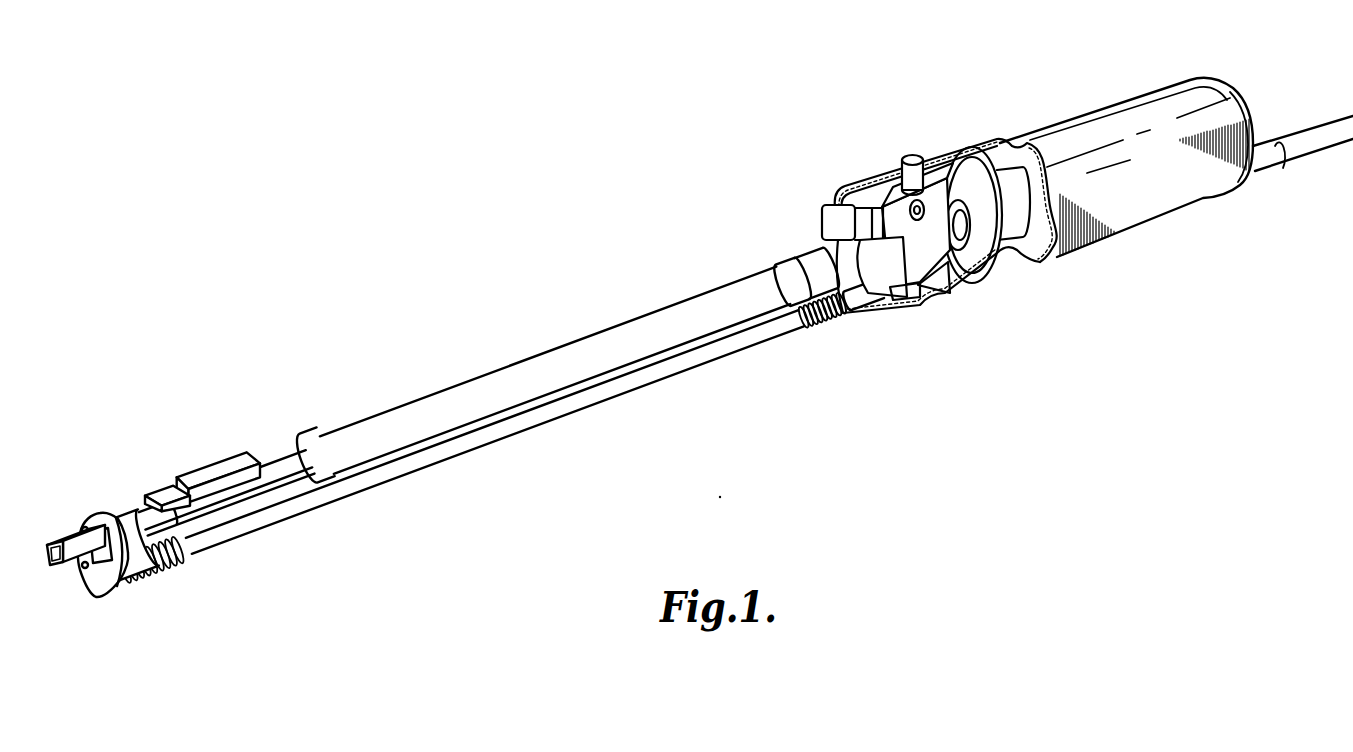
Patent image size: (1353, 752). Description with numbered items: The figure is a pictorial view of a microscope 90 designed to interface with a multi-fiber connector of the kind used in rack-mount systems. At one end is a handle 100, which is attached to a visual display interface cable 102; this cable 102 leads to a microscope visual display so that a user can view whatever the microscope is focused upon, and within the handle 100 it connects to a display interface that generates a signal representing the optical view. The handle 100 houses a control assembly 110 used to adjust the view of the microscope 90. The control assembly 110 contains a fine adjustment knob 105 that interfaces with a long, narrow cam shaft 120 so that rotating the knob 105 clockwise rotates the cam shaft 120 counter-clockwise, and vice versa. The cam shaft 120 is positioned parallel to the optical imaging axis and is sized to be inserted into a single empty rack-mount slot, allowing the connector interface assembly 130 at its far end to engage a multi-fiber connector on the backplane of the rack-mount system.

The microscope 90 is at (700, 367).
The handle 100 is at (1118, 217).
The visual display interface cable 102 is at (1292, 155).
The fine adjustment knob 105 is at (1003, 263).
The control assembly 110 is at (947, 296).
The cam shaft 120 is at (487, 443).
The connector interface assembly 130 is at (131, 594).